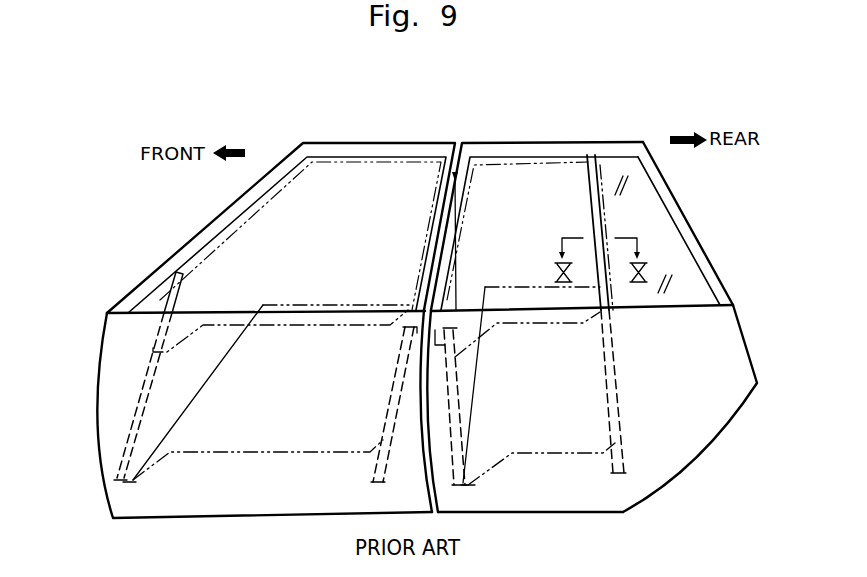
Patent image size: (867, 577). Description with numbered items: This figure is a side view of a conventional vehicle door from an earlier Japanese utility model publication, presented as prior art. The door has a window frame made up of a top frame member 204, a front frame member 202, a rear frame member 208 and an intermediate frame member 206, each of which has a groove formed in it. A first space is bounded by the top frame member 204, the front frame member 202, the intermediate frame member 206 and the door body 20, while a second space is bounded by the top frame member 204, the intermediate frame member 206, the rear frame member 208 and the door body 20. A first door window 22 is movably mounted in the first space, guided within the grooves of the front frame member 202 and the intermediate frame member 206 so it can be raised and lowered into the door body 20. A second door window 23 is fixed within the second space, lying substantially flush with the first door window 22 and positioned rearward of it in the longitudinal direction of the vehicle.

The door body 20 is at (588, 494).
The first door window 22 is at (527, 157).
The second door window 23 is at (692, 277).
The front frame member 202 is at (455, 174).
The top frame member 204 is at (553, 148).
The intermediate frame member 206 is at (600, 172).
The rear frame member 208 is at (667, 205).